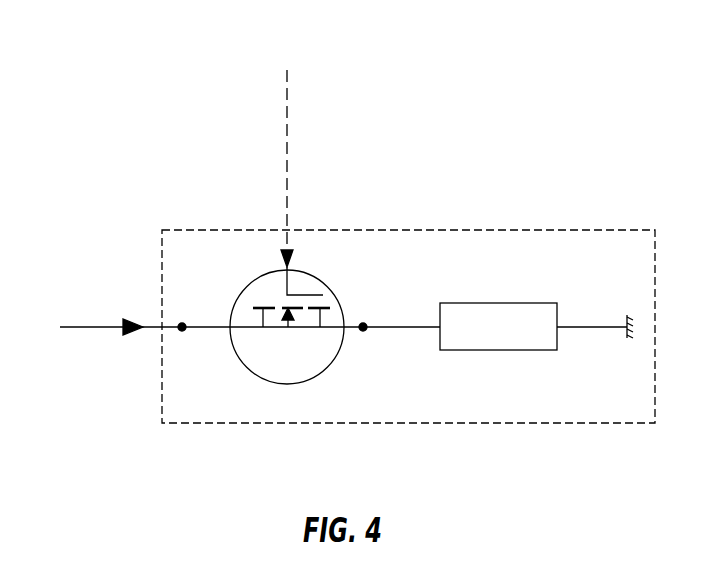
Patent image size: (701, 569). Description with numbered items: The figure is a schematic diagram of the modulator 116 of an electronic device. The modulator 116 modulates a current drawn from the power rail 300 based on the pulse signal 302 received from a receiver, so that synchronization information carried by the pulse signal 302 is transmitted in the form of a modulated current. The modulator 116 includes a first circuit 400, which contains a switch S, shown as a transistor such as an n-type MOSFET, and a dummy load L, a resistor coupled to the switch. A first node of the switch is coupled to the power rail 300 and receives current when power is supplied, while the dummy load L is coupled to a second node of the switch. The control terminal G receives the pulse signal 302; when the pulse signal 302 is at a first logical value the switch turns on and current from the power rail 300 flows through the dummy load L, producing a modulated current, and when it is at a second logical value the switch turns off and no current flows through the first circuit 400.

The modulator 116 is at (500, 83).
The power rail 300 is at (93, 328).
The pulse signal 302 is at (287, 148).
The first circuit 400 is at (150, 256).